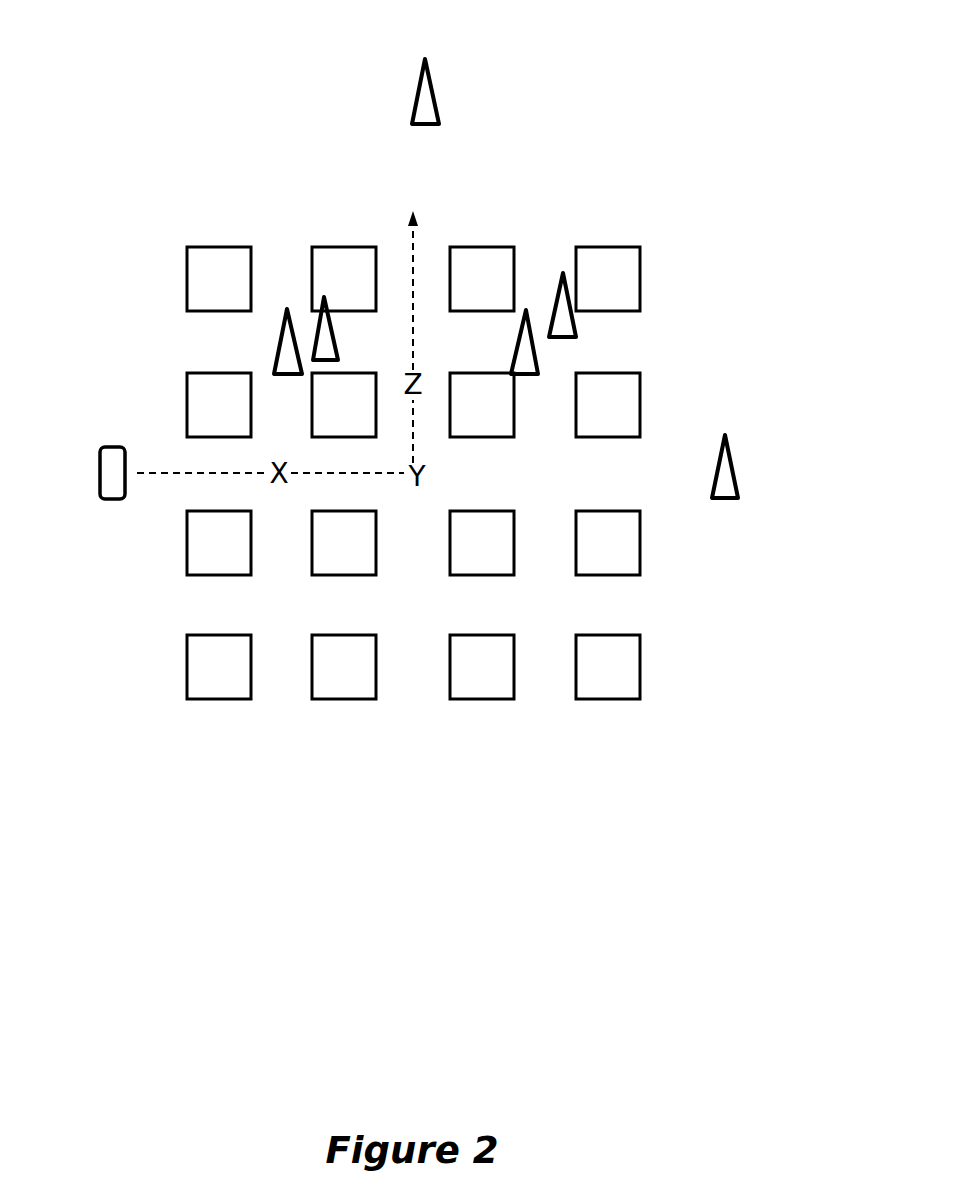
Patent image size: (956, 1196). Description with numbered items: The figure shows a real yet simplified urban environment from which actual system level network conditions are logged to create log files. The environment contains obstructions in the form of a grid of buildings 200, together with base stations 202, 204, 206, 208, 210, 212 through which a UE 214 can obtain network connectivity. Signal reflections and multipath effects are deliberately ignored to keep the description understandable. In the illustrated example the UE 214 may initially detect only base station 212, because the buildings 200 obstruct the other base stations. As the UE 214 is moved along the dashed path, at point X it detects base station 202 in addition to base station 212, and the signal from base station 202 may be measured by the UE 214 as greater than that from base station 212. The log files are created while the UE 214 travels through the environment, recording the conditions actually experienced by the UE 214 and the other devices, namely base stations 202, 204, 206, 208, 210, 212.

The buildings 200 is at (413, 473).
The base station 202 is at (278, 343).
The base station 204 is at (316, 313).
The base station 206 is at (416, 88).
The base station 208 is at (526, 310).
The base station 210 is at (562, 275).
The base station 212 is at (730, 445).
The UE 214 is at (98, 497).